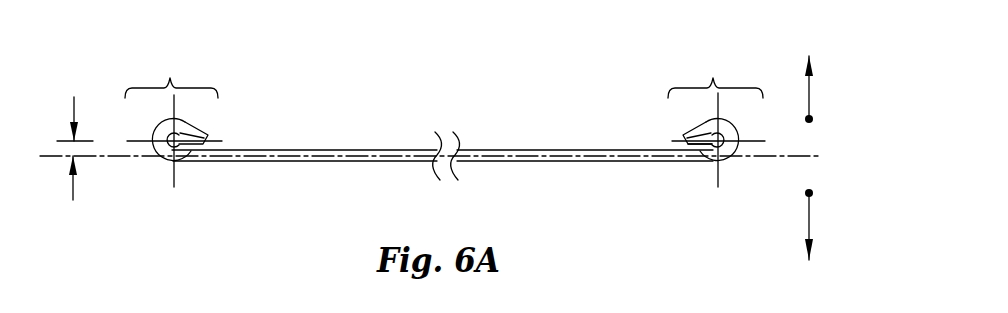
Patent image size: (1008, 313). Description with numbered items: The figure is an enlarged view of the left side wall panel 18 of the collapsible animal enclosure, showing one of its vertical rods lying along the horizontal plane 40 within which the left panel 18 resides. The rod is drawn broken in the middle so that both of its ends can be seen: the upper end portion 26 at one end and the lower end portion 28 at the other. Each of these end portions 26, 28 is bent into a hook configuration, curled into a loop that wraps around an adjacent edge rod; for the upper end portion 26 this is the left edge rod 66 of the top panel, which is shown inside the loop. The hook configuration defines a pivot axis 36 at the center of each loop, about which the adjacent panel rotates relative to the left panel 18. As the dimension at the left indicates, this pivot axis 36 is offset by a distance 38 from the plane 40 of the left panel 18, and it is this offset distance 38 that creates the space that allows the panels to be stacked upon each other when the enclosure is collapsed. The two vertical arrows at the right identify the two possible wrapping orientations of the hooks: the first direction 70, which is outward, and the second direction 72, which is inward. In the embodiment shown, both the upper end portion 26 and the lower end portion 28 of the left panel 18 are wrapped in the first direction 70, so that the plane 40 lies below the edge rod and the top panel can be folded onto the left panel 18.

The left side wall panel 18 is at (521, 126).
The upper end portion 26 is at (716, 120).
The lower end portion 28 is at (173, 121).
The pivot axis 36 is at (170, 145).
The offset distance 38 is at (74, 105).
The plane 40 is at (340, 158).
The left edge rod 66 is at (714, 147).
The first direction 70 is at (810, 93).
The second direction 72 is at (810, 222).